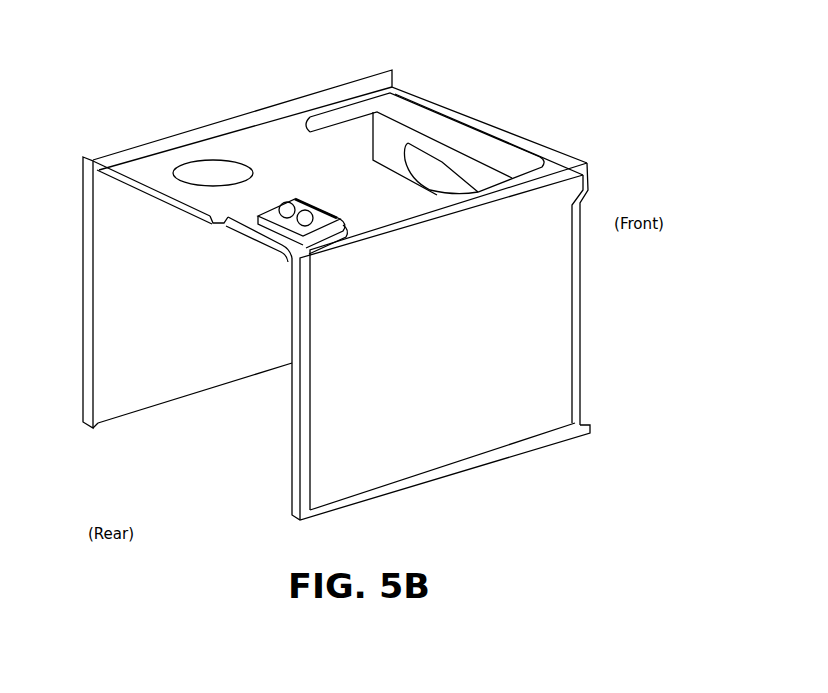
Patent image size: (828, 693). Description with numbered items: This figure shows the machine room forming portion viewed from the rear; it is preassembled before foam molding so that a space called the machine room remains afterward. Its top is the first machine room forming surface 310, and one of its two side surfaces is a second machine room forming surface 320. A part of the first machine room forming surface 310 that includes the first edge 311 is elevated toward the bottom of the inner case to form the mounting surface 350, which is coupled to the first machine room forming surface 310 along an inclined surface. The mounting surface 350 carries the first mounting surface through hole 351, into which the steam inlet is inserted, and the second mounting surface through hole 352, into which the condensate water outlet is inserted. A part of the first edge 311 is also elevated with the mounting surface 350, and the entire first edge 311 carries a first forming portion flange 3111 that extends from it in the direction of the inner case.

The first machine room forming surface 310 is at (388, 202).
The first edge 311 is at (180, 204).
The first forming portion flange 3111 is at (230, 216).
The second machine room forming surface 320 is at (440, 347).
The mounting surface 350 is at (262, 212).
The first mounting surface through hole 351 is at (306, 215).
The second mounting surface through hole 352 is at (286, 208).